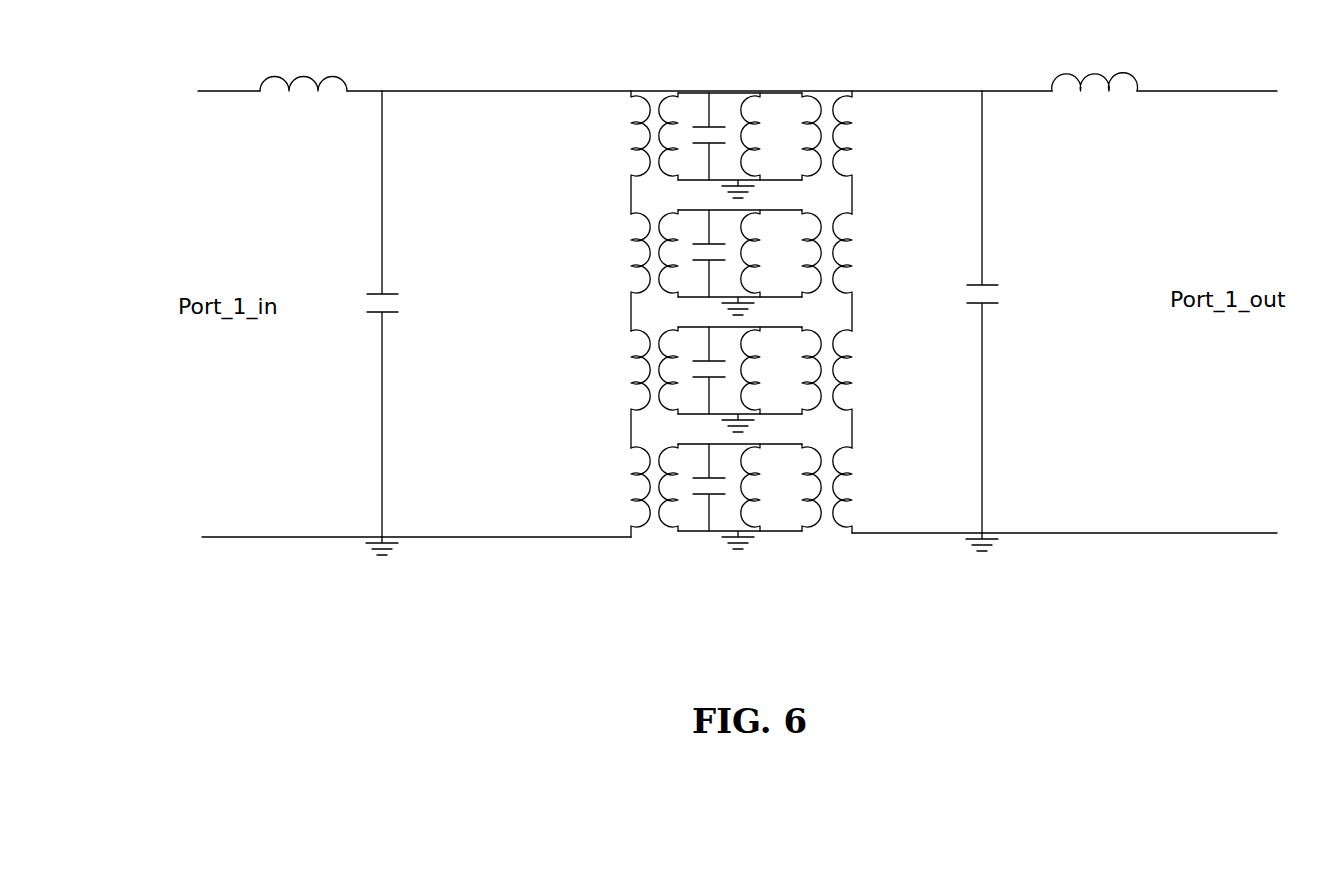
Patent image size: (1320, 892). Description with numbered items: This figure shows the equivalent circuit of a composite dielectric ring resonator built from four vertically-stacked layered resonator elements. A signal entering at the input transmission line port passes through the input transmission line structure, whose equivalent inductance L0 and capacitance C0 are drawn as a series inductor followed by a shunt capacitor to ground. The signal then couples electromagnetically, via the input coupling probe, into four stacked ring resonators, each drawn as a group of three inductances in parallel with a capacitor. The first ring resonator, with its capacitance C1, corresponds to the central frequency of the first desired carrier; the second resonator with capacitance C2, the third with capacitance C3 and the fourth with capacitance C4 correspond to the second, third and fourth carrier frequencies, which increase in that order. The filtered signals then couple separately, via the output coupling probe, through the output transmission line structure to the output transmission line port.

The equivalent inductance of the input transmission line structure L0 is at (303, 72).
The equivalent capacitance of the input transmission line structure C0 is at (401, 314).
The equivalent capacitance of the first top ring resonator C1 is at (715, 136).
The equivalent capacitance of the second top ring resonator C2 is at (715, 253).
The equivalent capacitance of the third top ring resonator C3 is at (715, 370).
The equivalent capacitance of the fourth top ring resonator C4 is at (715, 487).